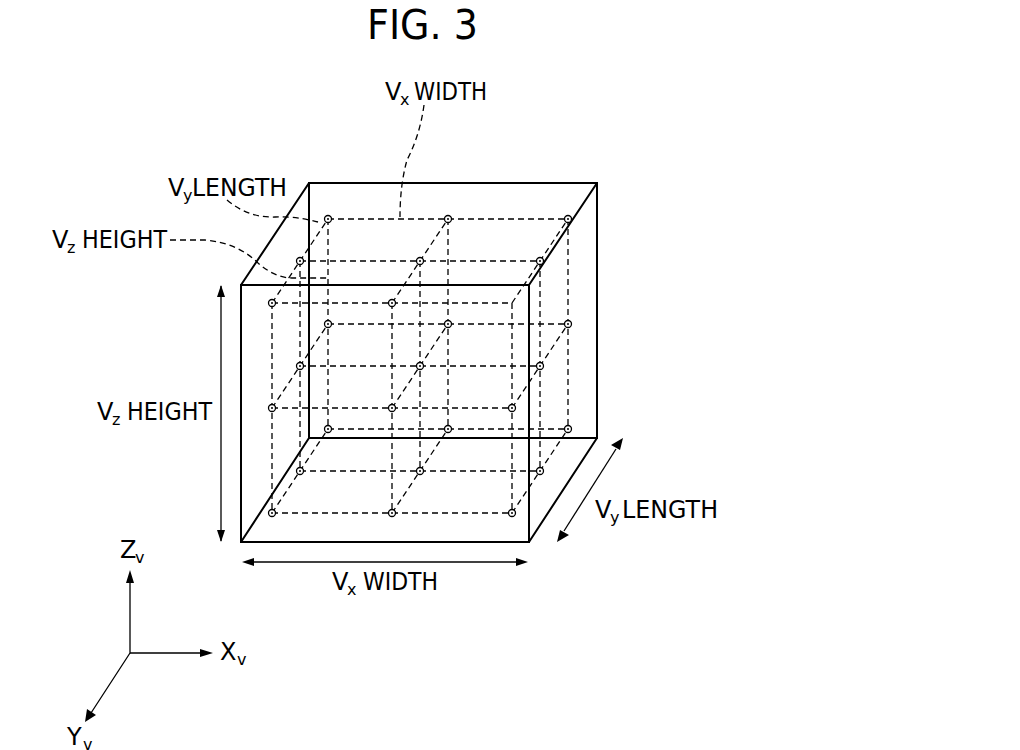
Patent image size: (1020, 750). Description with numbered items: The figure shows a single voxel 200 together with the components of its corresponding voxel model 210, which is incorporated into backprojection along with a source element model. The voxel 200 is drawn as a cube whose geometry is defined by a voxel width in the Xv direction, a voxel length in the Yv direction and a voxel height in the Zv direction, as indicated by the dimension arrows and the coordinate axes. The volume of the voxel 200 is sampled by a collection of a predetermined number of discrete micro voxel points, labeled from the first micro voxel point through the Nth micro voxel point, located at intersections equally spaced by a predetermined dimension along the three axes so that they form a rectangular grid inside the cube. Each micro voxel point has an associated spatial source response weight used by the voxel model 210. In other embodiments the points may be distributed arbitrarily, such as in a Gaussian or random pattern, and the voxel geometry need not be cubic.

The voxel 200 is at (597, 270).
The voxel model 210 is at (598, 130).